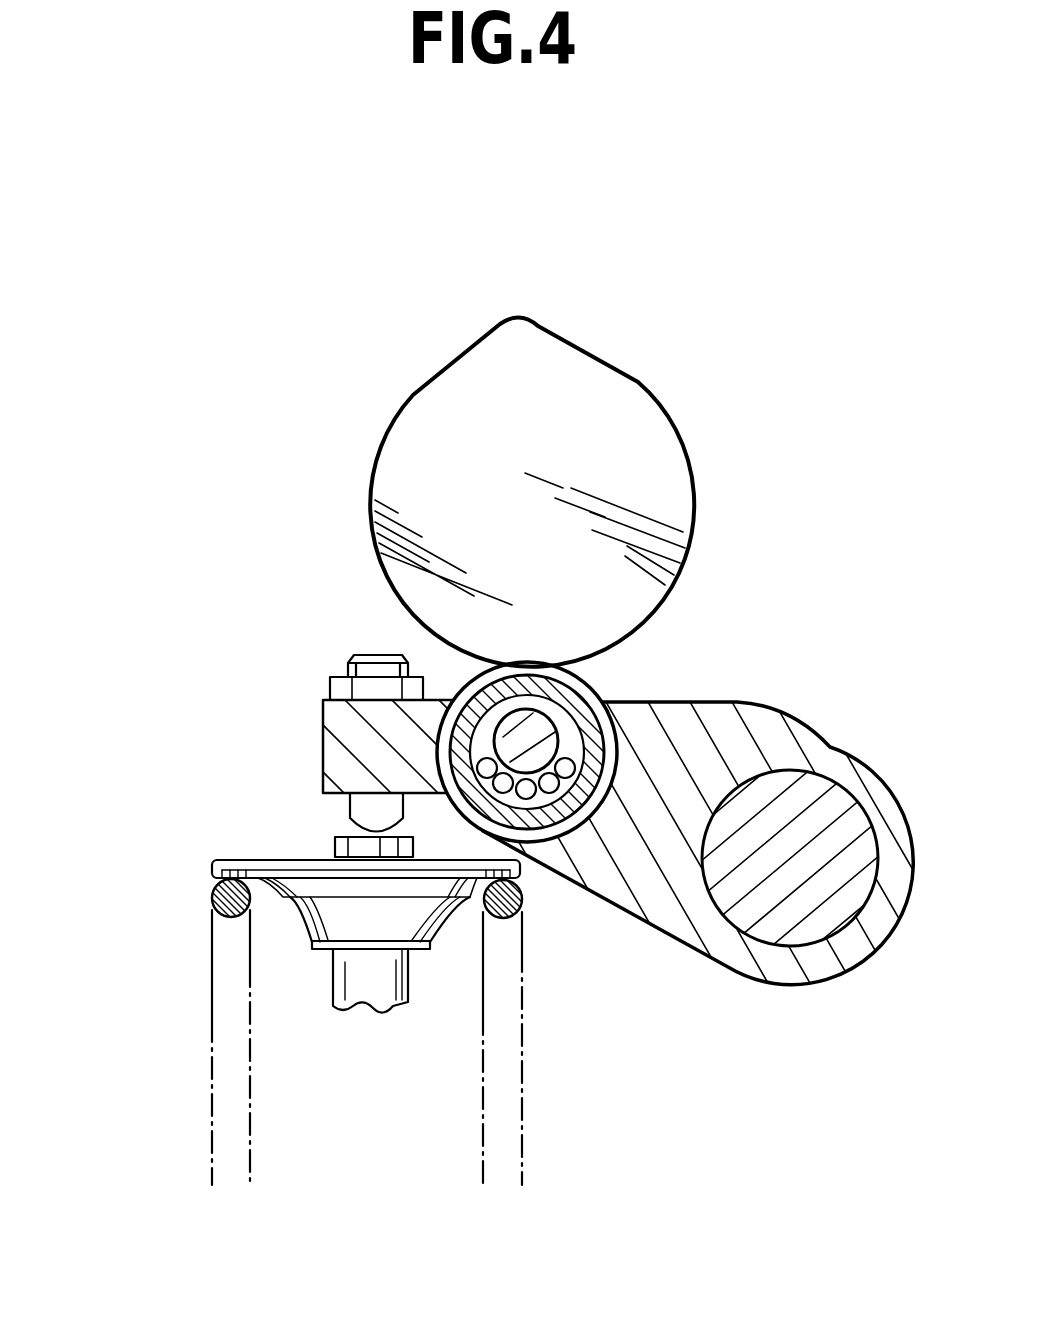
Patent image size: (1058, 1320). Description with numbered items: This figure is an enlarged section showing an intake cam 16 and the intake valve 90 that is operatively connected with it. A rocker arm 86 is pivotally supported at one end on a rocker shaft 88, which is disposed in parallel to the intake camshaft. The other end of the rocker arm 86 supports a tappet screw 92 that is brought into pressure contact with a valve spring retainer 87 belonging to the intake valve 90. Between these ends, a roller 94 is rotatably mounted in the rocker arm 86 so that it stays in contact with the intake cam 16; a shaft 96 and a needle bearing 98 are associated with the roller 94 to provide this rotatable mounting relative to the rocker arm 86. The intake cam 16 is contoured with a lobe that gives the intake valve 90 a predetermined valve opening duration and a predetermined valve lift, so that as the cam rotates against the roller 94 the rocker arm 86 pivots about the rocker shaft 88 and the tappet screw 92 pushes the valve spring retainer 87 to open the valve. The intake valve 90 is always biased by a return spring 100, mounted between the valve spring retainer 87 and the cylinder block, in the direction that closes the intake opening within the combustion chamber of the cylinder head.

The intake cam 16 is at (634, 379).
The rocker arm 86 is at (320, 727).
The valve spring retainer 87 is at (270, 860).
The rocker shaft 88 is at (727, 967).
The intake valve 90 is at (195, 955).
The tappet screw 92 is at (333, 840).
The roller 94 is at (575, 690).
The shaft 96 is at (462, 667).
The needle bearing 98 is at (567, 757).
The return spring 100 is at (208, 882).